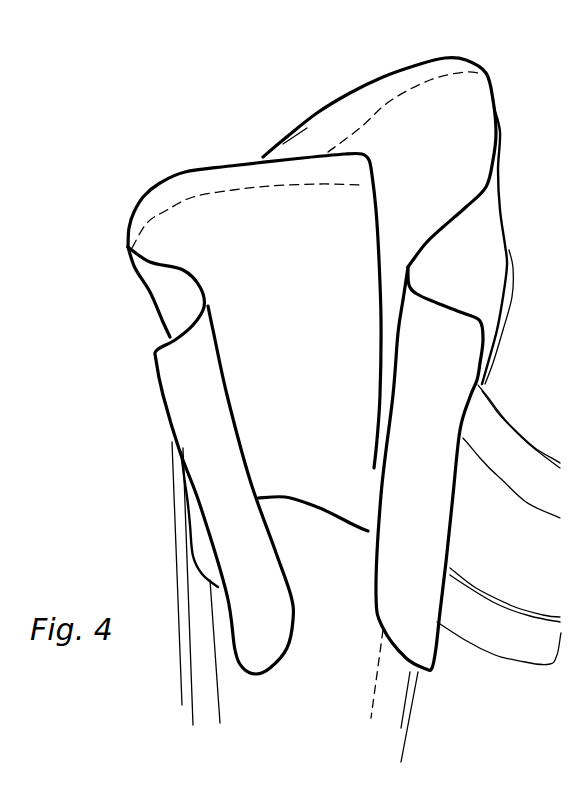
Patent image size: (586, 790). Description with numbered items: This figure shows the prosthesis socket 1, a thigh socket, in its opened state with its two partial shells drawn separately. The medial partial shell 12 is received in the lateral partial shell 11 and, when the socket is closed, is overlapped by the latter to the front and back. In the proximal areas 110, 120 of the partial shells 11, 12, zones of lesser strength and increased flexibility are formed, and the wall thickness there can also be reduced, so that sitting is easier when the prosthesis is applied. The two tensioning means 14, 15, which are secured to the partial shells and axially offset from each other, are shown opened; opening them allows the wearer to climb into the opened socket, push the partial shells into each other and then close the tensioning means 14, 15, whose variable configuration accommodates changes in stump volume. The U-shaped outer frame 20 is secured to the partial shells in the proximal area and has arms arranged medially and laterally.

The prosthesis socket 1 is at (212, 115).
The proximal area 110 is at (317, 133).
The proximal area 120 is at (157, 193).
The medial partial shell 12 is at (150, 295).
The lateral partial shell 11 is at (485, 213).
The tensioning means 14 is at (485, 420).
The tensioning means 15 is at (450, 588).
The frame 20 is at (177, 618).